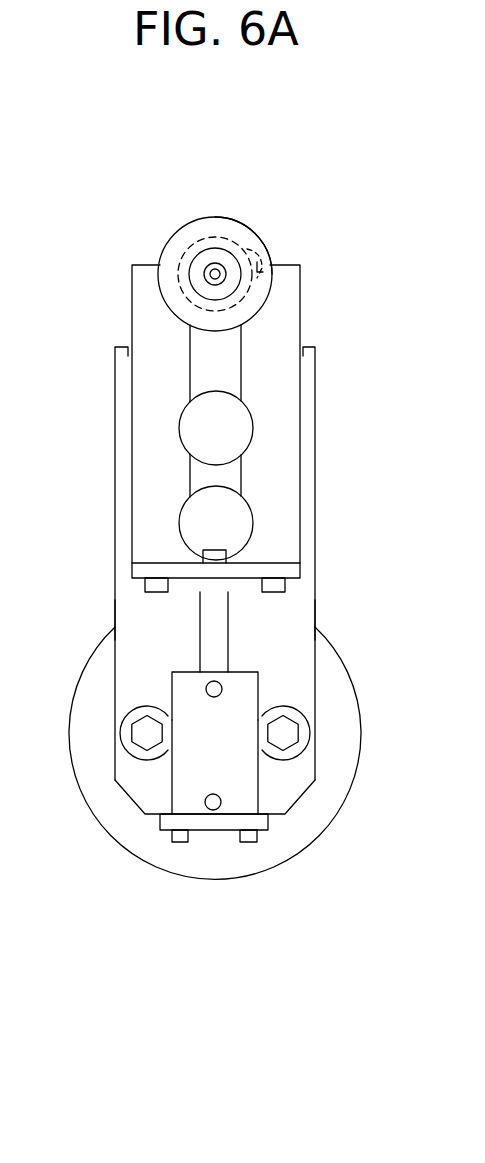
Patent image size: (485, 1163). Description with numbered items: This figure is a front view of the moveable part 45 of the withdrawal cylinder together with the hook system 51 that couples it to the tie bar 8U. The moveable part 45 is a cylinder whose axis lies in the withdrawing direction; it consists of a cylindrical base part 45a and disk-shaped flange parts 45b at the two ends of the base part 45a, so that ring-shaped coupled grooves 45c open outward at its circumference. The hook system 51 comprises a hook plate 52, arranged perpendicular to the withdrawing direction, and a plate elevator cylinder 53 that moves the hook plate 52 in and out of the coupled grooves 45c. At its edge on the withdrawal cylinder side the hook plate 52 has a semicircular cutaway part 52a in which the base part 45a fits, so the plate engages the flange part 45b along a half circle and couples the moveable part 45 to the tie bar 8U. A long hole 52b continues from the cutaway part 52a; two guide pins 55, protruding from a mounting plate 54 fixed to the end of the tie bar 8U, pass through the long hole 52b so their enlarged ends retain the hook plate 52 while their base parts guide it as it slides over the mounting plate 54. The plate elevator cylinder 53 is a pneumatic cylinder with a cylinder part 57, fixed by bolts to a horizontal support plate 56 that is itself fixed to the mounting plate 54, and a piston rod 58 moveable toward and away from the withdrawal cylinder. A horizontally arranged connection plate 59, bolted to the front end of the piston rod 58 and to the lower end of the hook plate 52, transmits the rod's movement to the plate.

The moveable part 45 is at (242, 223).
The base part 45a is at (183, 252).
The flange parts 45b is at (182, 228).
The coupled grooves 45c is at (223, 238).
The cutaway part 52a is at (252, 250).
The hook plate 52 is at (293, 375).
The long hole 52b is at (236, 343).
The guide pins 55 is at (185, 415).
The mounting plate 54 is at (312, 450).
The hook system 51 is at (312, 603).
The connection plate 59 is at (290, 568).
The piston rod 58 is at (228, 637).
The cylinder part 57 is at (248, 695).
The plate elevator cylinder 53 is at (245, 780).
The support plate 56 is at (227, 822).
The tie bar 8U is at (280, 853).